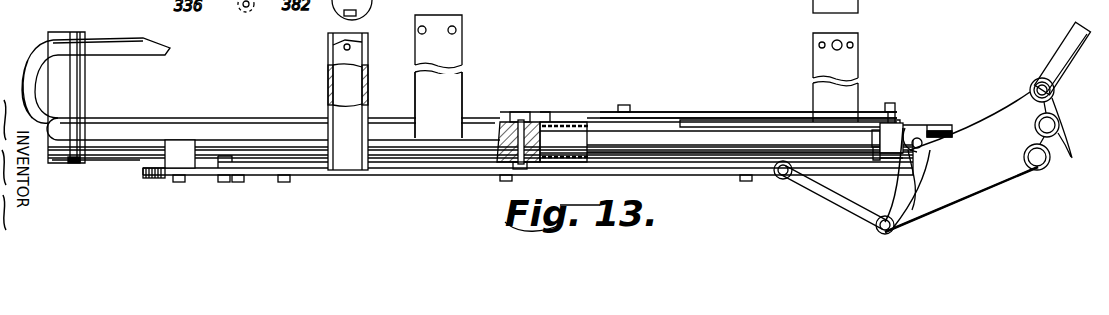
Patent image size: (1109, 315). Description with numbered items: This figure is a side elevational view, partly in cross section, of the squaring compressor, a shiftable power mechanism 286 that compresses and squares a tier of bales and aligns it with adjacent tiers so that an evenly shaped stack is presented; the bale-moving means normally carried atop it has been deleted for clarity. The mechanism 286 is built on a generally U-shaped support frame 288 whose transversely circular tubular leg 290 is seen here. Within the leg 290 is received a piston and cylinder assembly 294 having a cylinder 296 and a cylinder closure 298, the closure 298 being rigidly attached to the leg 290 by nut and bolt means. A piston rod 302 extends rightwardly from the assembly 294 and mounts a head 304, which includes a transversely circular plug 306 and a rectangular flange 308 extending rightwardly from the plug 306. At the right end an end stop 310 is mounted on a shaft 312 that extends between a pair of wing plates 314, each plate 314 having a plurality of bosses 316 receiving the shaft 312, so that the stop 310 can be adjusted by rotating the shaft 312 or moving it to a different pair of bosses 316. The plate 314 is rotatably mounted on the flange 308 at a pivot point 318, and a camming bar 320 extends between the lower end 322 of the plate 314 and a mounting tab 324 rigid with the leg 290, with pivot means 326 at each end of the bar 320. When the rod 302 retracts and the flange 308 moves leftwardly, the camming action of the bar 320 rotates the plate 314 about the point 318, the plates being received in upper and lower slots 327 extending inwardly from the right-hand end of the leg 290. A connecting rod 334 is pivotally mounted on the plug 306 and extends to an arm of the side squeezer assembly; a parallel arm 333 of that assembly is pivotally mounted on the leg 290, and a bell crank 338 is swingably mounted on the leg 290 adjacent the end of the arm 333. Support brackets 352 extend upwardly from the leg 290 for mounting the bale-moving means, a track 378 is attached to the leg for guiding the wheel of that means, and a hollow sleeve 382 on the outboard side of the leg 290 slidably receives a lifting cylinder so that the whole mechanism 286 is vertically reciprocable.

The mechanism 286 is at (124, 160).
The support frame 288 is at (110, 119).
The tubular leg 290 is at (605, 128).
The piston and cylinder assembly 294 is at (543, 121).
The cylinder 296 is at (572, 122).
The cylinder closure 298 is at (503, 120).
The piston rod 302 is at (872, 128).
The head 304 is at (902, 125).
The plug 306 is at (880, 160).
The flange 308 is at (925, 146).
The end stop 310 is at (1075, 47).
The shaft 312 is at (1050, 92).
The wing plate 314 is at (1026, 178).
The boss 316 is at (1072, 159).
The pivot point 318 is at (922, 150).
The camming bar 320 is at (855, 208).
The lower end 322 is at (916, 212).
The mounting tab 324 is at (775, 166).
The pivot means 326 is at (790, 162).
The slot 327 is at (936, 120).
The arm 333 is at (426, 172).
The connecting rod 334 is at (712, 113).
The bell crank 338 is at (205, 178).
The support bracket 352 is at (458, 20).
The track 378 is at (208, 118).
The hollow sleeve 382 is at (328, 76).